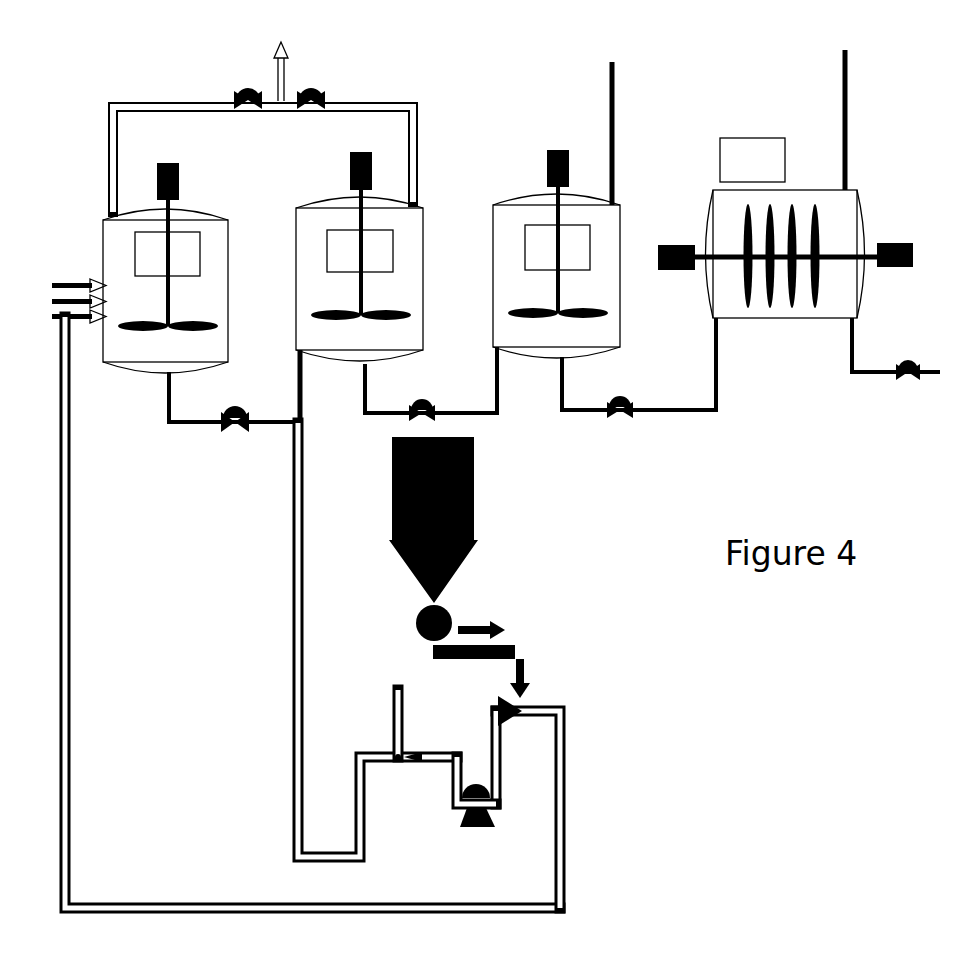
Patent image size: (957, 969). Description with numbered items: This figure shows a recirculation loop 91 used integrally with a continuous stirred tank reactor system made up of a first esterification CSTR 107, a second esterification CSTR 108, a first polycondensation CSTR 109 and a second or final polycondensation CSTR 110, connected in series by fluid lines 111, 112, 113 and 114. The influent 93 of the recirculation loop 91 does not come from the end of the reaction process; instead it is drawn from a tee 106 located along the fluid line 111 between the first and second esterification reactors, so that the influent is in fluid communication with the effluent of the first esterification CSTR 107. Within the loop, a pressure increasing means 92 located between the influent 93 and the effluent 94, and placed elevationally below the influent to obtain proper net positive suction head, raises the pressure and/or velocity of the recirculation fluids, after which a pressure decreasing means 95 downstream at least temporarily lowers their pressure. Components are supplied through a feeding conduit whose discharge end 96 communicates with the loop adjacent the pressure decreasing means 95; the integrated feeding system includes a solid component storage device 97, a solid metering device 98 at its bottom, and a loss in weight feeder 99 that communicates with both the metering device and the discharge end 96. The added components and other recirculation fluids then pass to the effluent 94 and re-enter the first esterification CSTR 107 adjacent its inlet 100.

The recirculation loop 91 is at (553, 809).
The pressure increasing means 92 is at (477, 823).
The influent 93 is at (459, 782).
The effluent 94 is at (515, 757).
The pressure decreasing means 95 is at (492, 710).
The discharge end 96 is at (532, 678).
The solid component storage device 97 is at (409, 520).
The solid metering device 98 is at (415, 625).
The loss in weight feeder 99 is at (488, 640).
The inlet 100 is at (286, 593).
The tee 106 is at (377, 603).
The first esterification CSTR 107 is at (165, 268).
The second esterification CSTR 108 is at (359, 256).
The first polycondensation CSTR 109 is at (556, 210).
The second or final polycondensation CSTR 110 is at (785, 184).
The fluid line 111 is at (234, 402).
The fluid line 112 is at (431, 384).
The fluid line 113 is at (639, 368).
The fluid line 114 is at (896, 349).